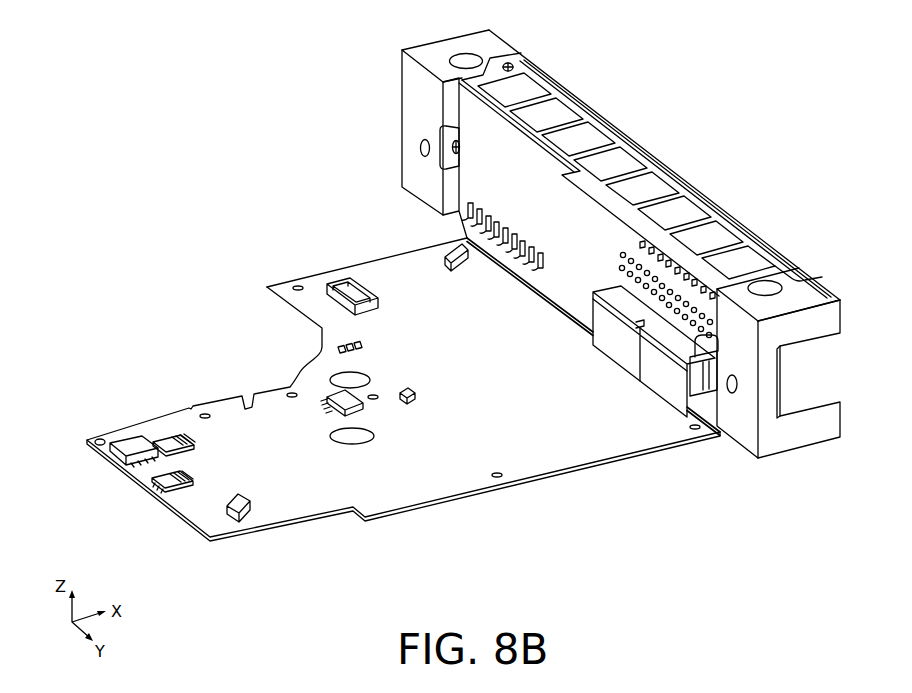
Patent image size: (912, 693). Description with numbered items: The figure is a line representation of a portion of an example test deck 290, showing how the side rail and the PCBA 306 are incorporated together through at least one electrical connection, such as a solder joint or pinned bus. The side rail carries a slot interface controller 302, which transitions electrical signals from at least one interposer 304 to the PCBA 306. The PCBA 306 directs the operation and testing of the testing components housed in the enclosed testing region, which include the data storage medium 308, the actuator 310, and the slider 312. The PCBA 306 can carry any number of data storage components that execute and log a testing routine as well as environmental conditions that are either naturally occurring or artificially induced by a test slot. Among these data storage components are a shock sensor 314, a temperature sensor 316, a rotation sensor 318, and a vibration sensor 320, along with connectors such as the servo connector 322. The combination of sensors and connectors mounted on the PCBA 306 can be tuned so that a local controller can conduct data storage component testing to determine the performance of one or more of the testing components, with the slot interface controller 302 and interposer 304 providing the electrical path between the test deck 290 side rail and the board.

The test deck 290 is at (742, 120).
The slot interface controller 302 is at (593, 241).
The interposer 304 is at (553, 91).
The PCBA 306 is at (446, 468).
The data storage medium 308 is at (417, 398).
The actuator 310 is at (326, 409).
The slider 312 is at (251, 498).
The shock sensor 314 is at (447, 273).
The temperature sensor 316 is at (196, 476).
The rotation sensor 318 is at (191, 440).
The vibration sensor 320 is at (623, 369).
The servo connector 322 is at (130, 442).